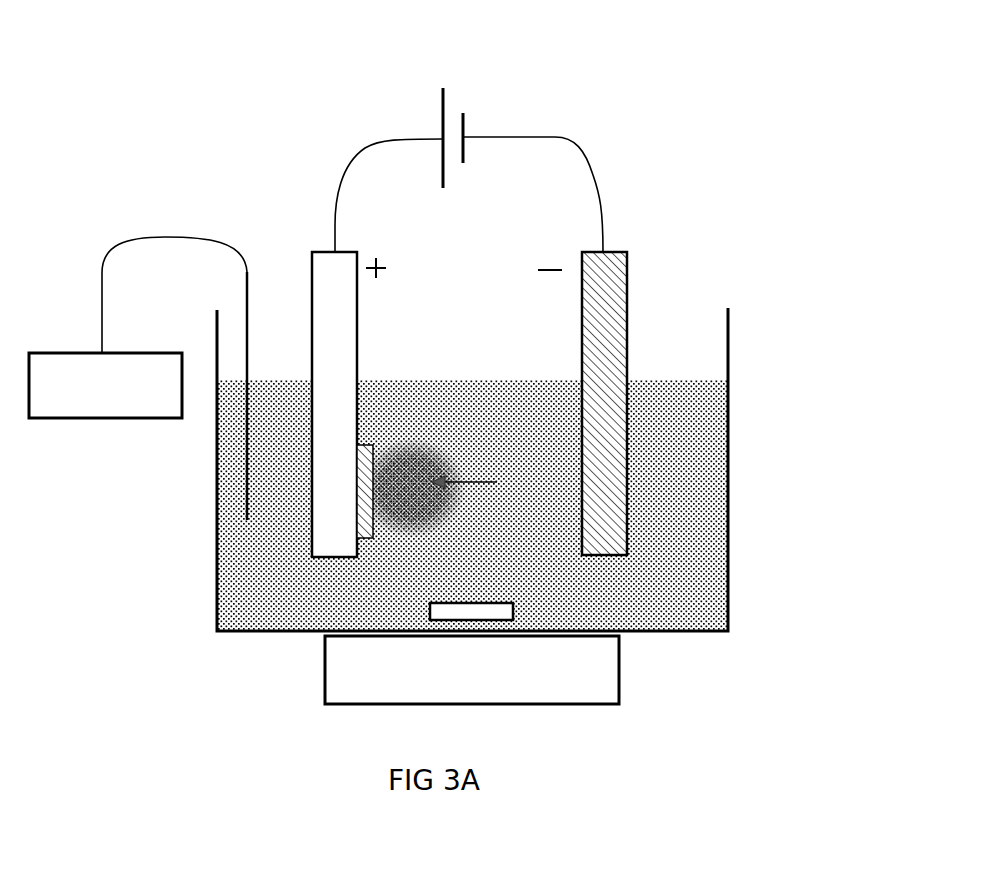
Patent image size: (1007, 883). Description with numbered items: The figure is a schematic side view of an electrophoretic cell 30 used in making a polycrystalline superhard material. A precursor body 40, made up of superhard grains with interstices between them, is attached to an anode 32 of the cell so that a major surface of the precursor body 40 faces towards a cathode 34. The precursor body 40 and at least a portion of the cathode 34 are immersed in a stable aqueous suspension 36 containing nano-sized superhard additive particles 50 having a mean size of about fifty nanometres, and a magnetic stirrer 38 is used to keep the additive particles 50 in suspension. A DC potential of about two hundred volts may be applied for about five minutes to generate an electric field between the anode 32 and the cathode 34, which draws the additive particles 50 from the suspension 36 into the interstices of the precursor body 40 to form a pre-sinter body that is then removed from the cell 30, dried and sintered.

The electrophoretic cell 30 is at (138, 106).
The anode 32 is at (311, 251).
The cathode 34 is at (627, 275).
The aqueous suspension 36 is at (529, 535).
The magnetic stirrer 38 is at (619, 668).
The precursor body 40 is at (367, 540).
The additive particles 50 is at (398, 498).